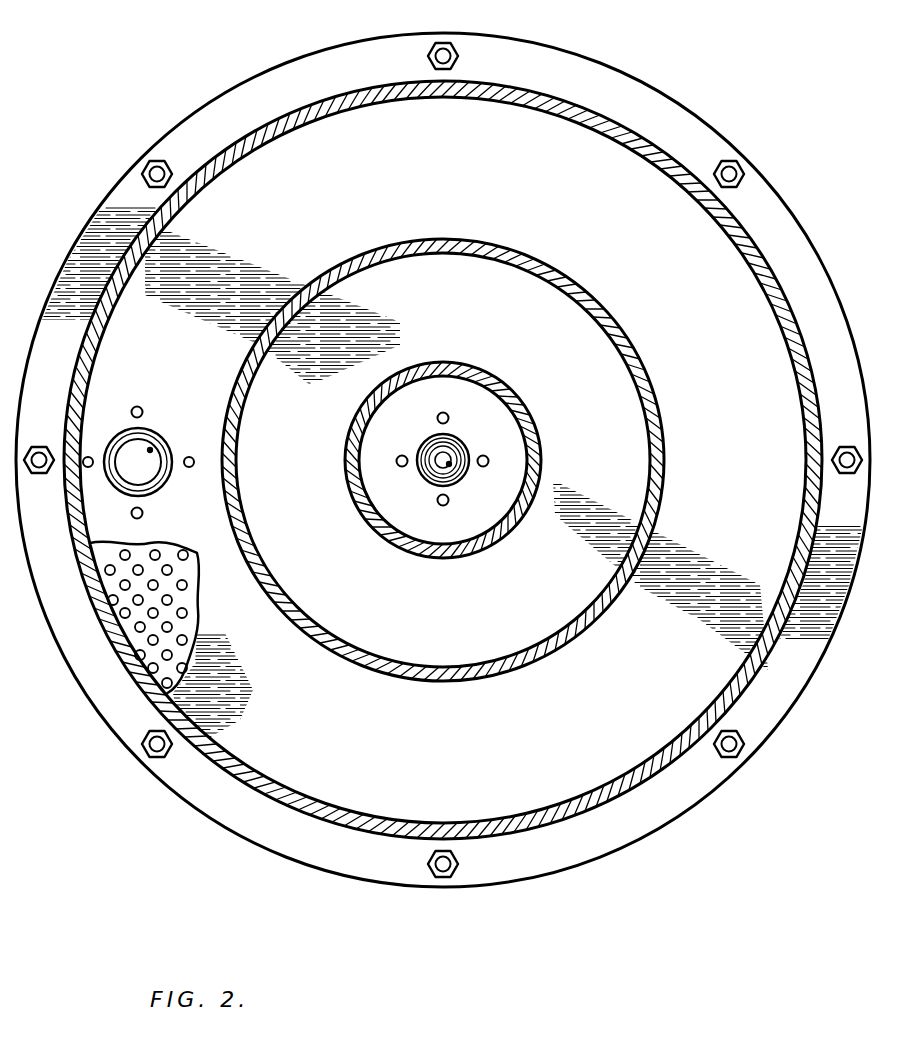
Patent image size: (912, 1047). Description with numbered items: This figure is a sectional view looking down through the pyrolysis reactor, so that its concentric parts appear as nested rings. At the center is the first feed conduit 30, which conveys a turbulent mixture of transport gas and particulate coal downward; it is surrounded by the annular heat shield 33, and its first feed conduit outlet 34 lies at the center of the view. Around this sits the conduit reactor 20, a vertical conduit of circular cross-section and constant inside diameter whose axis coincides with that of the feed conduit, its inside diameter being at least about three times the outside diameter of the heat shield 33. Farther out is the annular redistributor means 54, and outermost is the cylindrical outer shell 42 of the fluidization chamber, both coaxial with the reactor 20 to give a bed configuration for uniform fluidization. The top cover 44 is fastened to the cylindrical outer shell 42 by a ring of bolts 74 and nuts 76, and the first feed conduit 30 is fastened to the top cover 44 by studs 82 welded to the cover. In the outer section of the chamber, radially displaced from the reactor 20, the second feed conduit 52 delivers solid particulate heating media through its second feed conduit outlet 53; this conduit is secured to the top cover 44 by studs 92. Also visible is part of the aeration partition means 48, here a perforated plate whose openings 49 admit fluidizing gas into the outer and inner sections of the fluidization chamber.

The conduit reactor 20 is at (478, 548).
The first feed conduit 30 is at (455, 449).
The annular heat shield 33 is at (430, 453).
The first feed conduit outlet 34 is at (450, 469).
The cylindrical outer shell 42 is at (634, 136).
The top cover 44 is at (633, 701).
The aeration partition means 48 is at (197, 663).
The openings 49 is at (188, 641).
The second feed conduit 52 is at (161, 478).
The second feed conduit outlet 53 is at (153, 447).
The annular redistributor means 54 is at (585, 287).
The bolt 74 is at (143, 174).
The nut 76 is at (157, 158).
The studs 82 is at (436, 418).
The studs 92 is at (137, 406).